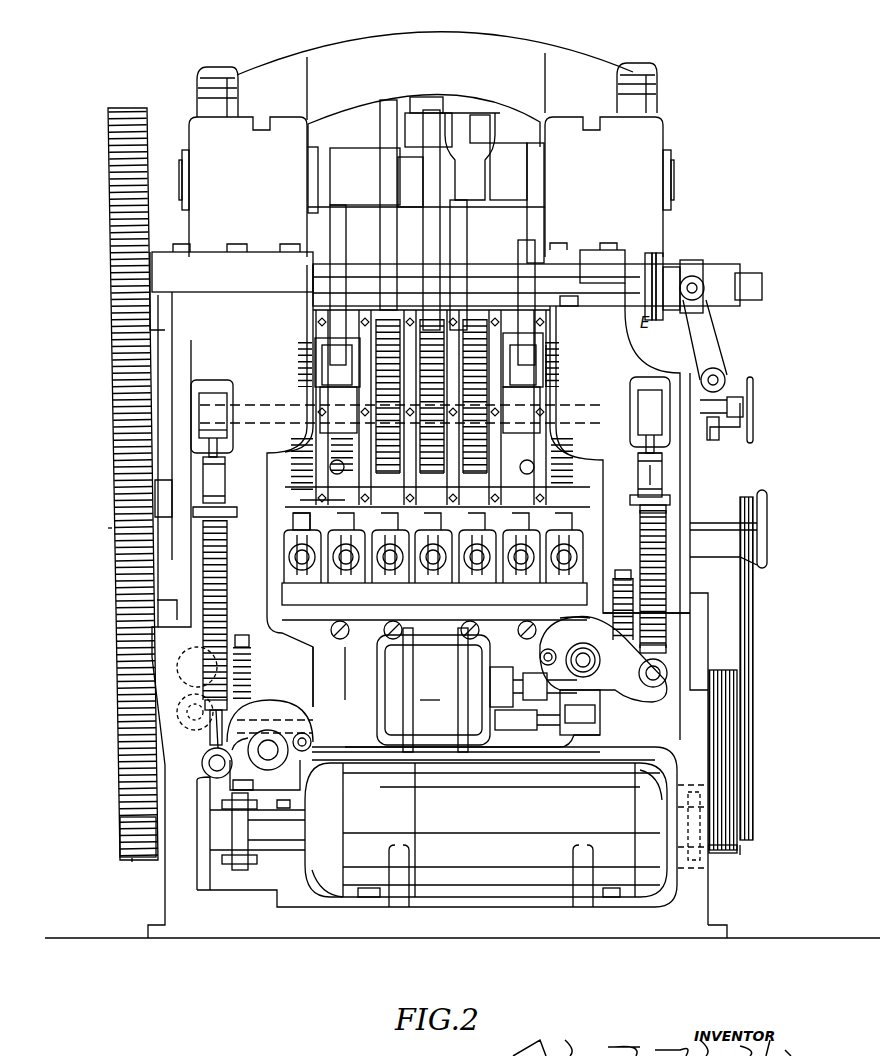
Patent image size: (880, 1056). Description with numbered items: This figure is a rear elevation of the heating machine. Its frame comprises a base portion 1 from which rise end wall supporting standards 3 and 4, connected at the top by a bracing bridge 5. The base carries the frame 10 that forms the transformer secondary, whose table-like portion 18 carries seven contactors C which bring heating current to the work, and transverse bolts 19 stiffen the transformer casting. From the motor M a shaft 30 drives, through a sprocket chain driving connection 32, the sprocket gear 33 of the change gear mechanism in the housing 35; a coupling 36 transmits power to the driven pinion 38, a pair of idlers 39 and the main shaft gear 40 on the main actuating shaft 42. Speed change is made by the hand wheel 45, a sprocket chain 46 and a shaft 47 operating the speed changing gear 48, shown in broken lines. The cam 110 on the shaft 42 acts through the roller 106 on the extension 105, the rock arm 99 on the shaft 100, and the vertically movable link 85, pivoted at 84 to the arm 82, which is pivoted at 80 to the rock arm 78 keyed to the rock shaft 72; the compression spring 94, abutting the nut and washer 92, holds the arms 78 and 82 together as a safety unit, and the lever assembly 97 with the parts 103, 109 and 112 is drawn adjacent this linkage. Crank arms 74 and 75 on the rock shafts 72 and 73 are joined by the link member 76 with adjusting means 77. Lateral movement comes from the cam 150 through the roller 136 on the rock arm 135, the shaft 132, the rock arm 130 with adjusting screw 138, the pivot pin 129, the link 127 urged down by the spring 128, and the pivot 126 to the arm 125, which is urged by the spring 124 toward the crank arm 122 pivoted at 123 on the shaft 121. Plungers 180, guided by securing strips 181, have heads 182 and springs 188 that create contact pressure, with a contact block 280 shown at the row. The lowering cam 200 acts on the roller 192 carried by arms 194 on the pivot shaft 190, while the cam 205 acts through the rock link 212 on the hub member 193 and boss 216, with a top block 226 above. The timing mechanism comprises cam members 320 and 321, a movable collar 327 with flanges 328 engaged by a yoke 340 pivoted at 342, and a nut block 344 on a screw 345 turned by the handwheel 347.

The base portion 1 is at (250, 940).
The end wall supporting standard 3 is at (604, 160).
The end wall supporting standard 4 is at (248, 162).
The bracing bridge 5 is at (386, 42).
The frame 10 is at (329, 677).
The table-like portion 18 is at (434, 601).
The transverse bolts 19 is at (331, 632).
The shaft 30 is at (585, 697).
The sprocket chain driving connection 32 is at (728, 750).
The sprocket gear 33 is at (740, 852).
The housing 35 is at (486, 835).
The coupling 36 is at (244, 865).
The driven pinion 38 is at (132, 860).
The idlers 39 is at (112, 531).
The main shaft gear 40 is at (110, 195).
The main actuating shaft 42 is at (378, 252).
The hand wheel 45 is at (767, 515).
The sprocket chain 46 is at (753, 612).
The shaft 47 is at (738, 832).
The speed changing gear 48 is at (698, 880).
The rock shaft 72 is at (588, 656).
The rock shaft 73 is at (196, 660).
The crank arm 74 is at (585, 712).
The crank arm 75 is at (180, 688).
The link member 76 is at (360, 720).
The adjusting means 77 is at (515, 728).
The rock arm 78 is at (591, 666).
The pivot 80 is at (540, 657).
The arm 82 is at (572, 627).
The pivot 84 is at (654, 687).
The actuating link 85 is at (662, 634).
The nut and washer 92 is at (624, 572).
The compression spring 94 is at (628, 616).
The lever 97 is at (560, 618).
The rock arm 99 is at (648, 390).
The shaft 100 is at (600, 405).
The plate 103 is at (635, 510).
The roller carrying extension 105 is at (548, 368).
The roller 106 is at (528, 358).
The cylinder cap 109 is at (640, 455).
The cam 110 is at (535, 330).
The cylinder 112 is at (638, 475).
The shaft 121 is at (268, 768).
The crank arm 122 is at (234, 745).
The pivot 123 is at (311, 742).
The spring 124 is at (250, 672).
The arm 125 is at (270, 721).
The pivot 126 is at (205, 770).
The link 127 is at (215, 738).
The spring 128 is at (240, 586).
The pivot pin 129 is at (233, 477).
The rock arm 130 is at (230, 407).
The shaft 132 is at (272, 428).
The rock arm 135 is at (320, 366).
The roller 136 is at (325, 360).
The adjusting screw 138 is at (330, 468).
The cam 150 is at (335, 296).
The vertically slidable members 180 is at (487, 403).
The securing strips 181 is at (582, 296).
The enlarged head 182 is at (437, 497).
The spring 188 is at (378, 408).
The pivot shaft 190 is at (182, 177).
The roller 192 is at (412, 182).
The hub member 193 is at (365, 176).
The arms 194 is at (398, 108).
The lowering and pressure cam 200 is at (404, 235).
The cam 205 is at (462, 232).
The rock link 212 is at (470, 180).
The boss 216 is at (487, 140).
The top block 226 is at (428, 122).
The contact block 280 is at (313, 522).
The cam member 320 is at (663, 265).
The cam member 321 is at (654, 253).
The collar 327 is at (700, 262).
The flanges 328 is at (708, 284).
The yoke 340 is at (712, 336).
The pivot 342 is at (718, 378).
The nut block 344 is at (735, 428).
The screw 345 is at (745, 402).
The handwheel 347 is at (753, 432).
The contactor C is at (365, 583).
The motor M is at (433, 690).